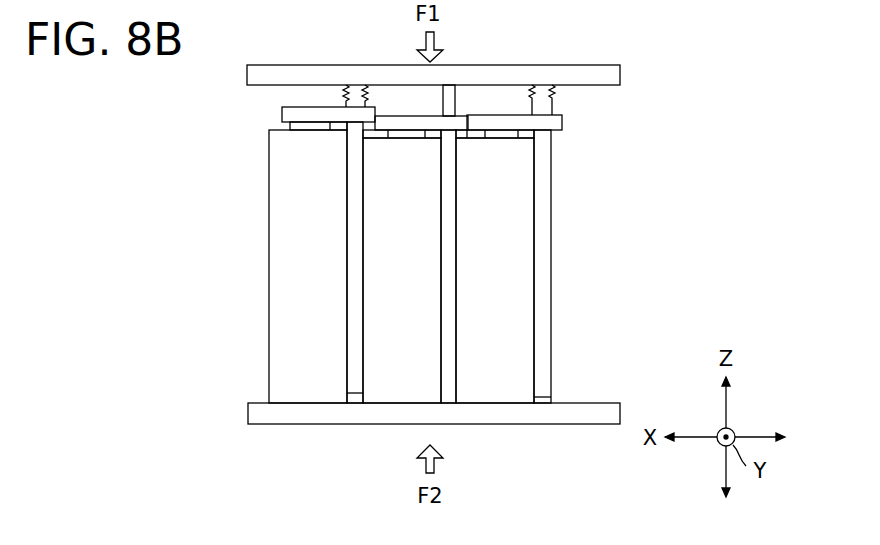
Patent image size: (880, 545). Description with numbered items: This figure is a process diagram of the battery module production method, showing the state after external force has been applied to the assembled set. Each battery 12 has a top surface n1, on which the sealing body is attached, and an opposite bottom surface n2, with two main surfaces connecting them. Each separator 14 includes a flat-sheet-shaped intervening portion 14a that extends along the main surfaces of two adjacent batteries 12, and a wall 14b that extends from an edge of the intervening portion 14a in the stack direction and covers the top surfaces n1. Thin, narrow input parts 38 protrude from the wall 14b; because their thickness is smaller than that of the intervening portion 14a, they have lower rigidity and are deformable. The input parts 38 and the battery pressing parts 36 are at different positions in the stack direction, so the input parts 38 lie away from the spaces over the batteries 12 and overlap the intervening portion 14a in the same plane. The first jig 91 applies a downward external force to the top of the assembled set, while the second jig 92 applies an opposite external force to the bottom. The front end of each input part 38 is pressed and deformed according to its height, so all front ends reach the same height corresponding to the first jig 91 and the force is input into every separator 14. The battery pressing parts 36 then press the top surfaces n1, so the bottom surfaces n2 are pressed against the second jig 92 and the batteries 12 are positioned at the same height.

The first jig 91 is at (590, 65).
The second jig 92 is at (580, 425).
The wall 14b is at (282, 107).
The battery pressing part 36 is at (317, 136).
The input part 38 is at (347, 106).
The separator 14 is at (366, 375).
The intervening portion 14a is at (352, 342).
The battery 12 is at (268, 348).
The top surface n1 is at (269, 130).
The bottom surface n2 is at (290, 405).